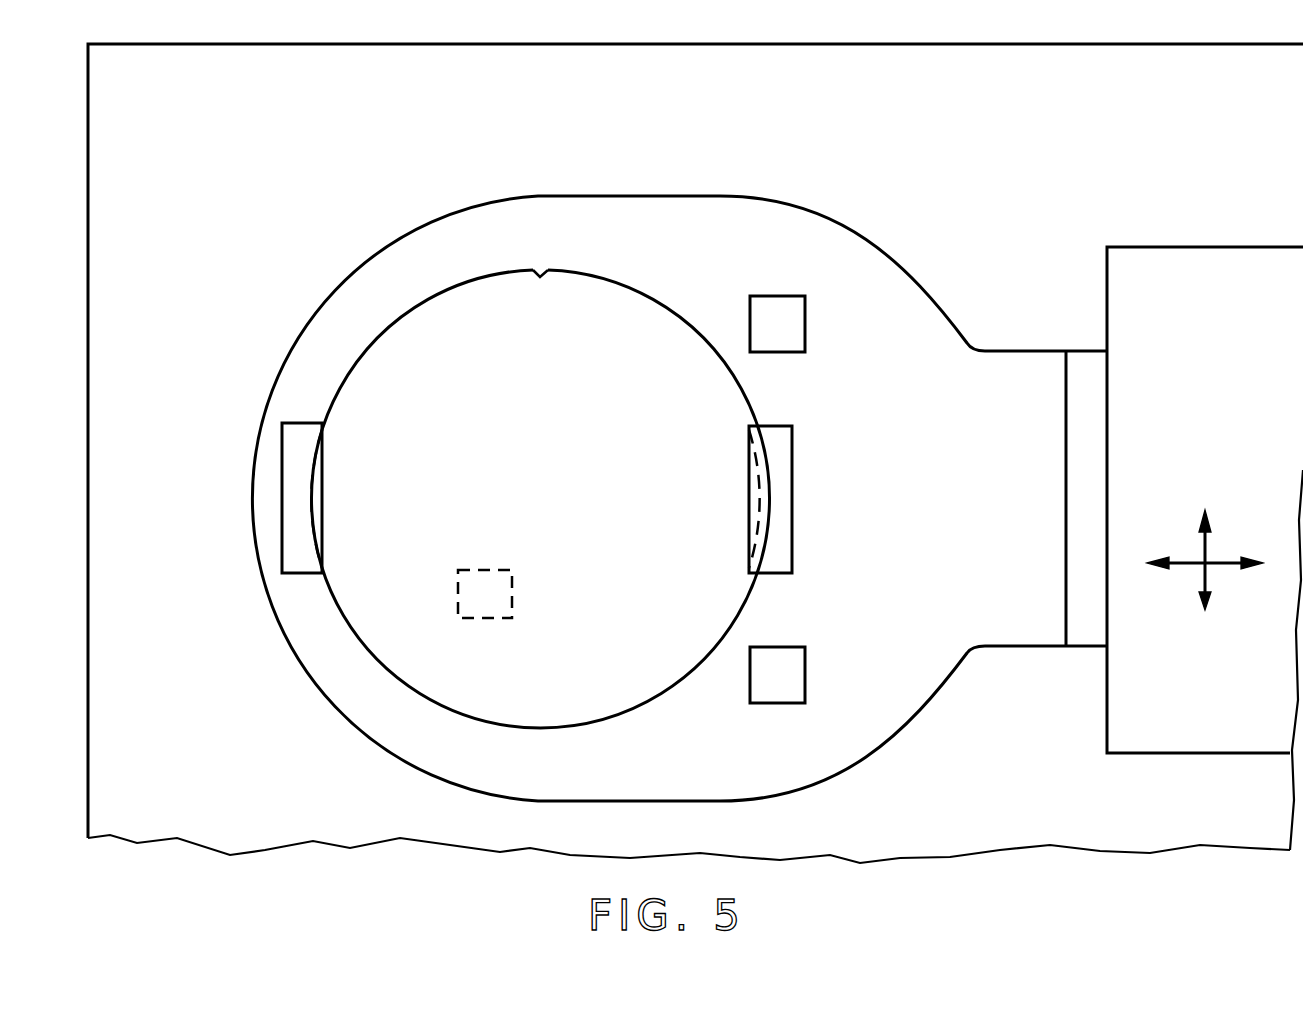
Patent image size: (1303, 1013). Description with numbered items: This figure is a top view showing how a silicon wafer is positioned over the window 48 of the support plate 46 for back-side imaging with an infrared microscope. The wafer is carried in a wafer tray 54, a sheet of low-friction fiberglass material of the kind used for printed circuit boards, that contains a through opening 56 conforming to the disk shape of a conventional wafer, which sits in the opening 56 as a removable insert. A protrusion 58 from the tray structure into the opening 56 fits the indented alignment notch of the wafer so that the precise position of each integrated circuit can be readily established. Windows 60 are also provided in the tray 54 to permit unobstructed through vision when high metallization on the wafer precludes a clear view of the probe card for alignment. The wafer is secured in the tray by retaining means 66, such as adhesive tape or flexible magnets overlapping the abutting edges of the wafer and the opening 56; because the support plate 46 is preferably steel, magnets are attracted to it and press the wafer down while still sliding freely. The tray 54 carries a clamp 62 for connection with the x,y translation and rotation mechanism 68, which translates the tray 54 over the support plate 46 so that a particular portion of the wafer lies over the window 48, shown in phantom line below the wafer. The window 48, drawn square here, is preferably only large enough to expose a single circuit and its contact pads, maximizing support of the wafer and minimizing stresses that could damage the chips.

The support plate 46 is at (1205, 386).
The window 48 is at (505, 602).
The wafer tray 54 is at (797, 208).
The through opening 56 is at (670, 683).
The protrusion 58 is at (548, 277).
The windows 60 is at (805, 323).
The clamp 62 is at (1087, 373).
The retaining means 66 is at (290, 422).
The x,y translation and rotation mechanism 68 is at (1143, 737).